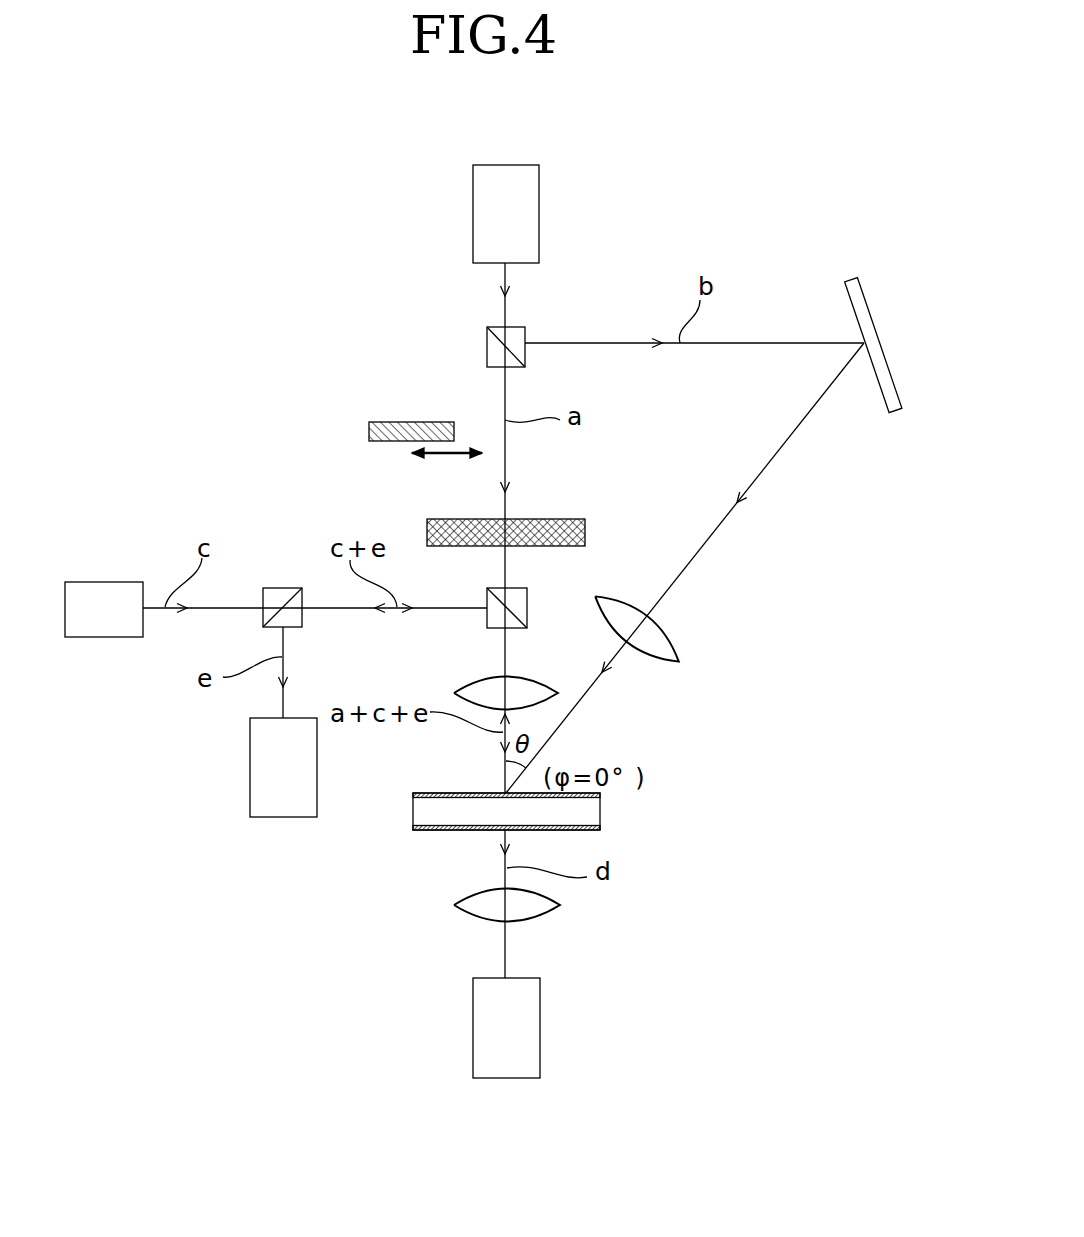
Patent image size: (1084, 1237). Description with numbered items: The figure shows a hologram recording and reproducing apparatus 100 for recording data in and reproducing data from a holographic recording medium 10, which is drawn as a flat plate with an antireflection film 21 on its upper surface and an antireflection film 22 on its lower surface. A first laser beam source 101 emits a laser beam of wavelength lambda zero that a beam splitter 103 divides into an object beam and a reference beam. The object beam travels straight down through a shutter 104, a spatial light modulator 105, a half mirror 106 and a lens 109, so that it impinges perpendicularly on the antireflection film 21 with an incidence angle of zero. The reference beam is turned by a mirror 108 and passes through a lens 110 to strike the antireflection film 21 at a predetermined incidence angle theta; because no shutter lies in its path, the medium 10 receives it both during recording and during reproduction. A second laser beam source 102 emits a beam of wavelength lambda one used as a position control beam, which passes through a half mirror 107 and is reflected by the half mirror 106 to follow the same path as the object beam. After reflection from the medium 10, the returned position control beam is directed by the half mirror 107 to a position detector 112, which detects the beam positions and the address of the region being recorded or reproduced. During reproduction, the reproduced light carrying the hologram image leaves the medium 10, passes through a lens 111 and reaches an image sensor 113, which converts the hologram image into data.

The hologram recording and reproducing apparatus 100 is at (851, 169).
The first laser beam source 101 is at (539, 210).
The second laser beam source 102 is at (110, 582).
The beam splitter 103 is at (487, 340).
The shutter 104 is at (388, 422).
The spatial light modulator 105 is at (563, 519).
The half mirror 106 is at (527, 613).
The half mirror 107 is at (283, 588).
The mirror 108 is at (853, 280).
The lens 109 is at (468, 683).
The lens 110 is at (668, 632).
The lens 111 is at (530, 920).
The position detector 112 is at (252, 768).
The image sensor 113 is at (540, 1022).
The holographic recording medium 10 is at (540, 792).
The antireflection film 21 is at (437, 793).
The antireflection film 22 is at (433, 830).